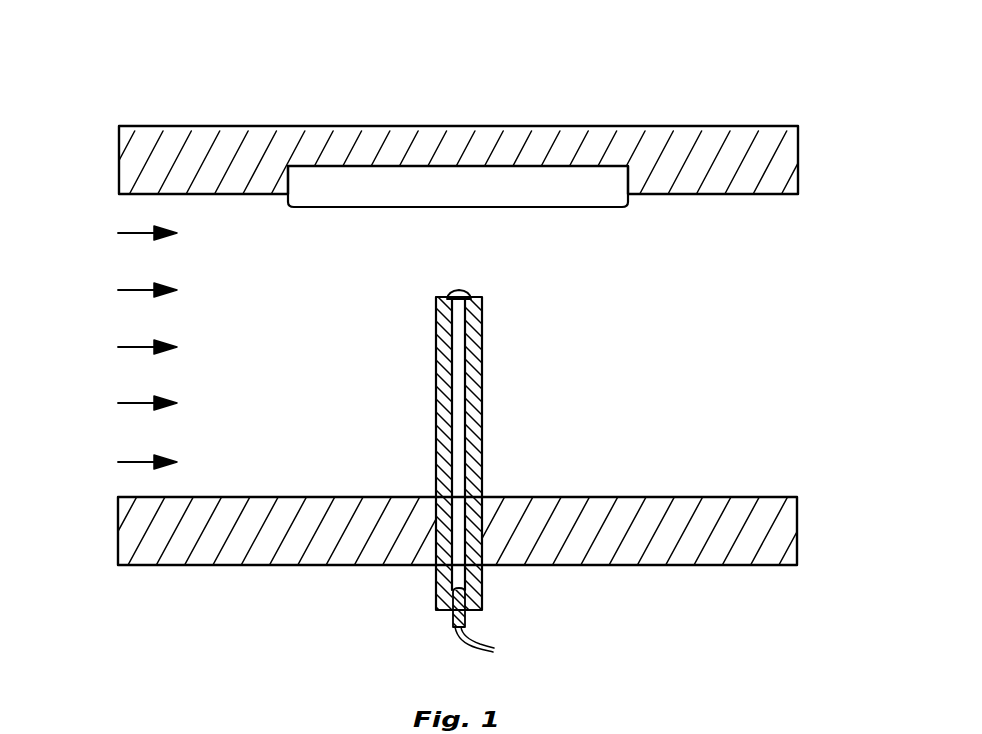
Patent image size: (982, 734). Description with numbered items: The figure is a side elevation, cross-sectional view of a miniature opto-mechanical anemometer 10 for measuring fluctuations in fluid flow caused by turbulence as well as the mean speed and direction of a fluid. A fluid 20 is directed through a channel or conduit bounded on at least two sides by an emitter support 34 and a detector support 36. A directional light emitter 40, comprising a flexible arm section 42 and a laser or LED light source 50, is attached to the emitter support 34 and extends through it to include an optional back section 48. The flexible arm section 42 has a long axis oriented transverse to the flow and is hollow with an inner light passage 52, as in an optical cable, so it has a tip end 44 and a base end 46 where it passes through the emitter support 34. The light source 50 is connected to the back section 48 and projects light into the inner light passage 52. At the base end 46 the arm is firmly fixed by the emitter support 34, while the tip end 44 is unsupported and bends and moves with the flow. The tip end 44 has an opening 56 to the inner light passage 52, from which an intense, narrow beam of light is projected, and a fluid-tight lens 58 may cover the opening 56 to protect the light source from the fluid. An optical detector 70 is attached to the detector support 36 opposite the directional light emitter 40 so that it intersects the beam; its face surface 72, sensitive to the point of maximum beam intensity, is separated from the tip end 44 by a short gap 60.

The opto-mechanical anemometer 10 is at (103, 73).
The fluid 20 is at (132, 347).
The emitter support 34 is at (247, 566).
The detector support 36 is at (245, 126).
The directional light emitter 40 is at (483, 392).
The flexible arm section 42 is at (436, 415).
The tip end 44 is at (483, 315).
The base end 46 is at (434, 484).
The back section 48 is at (435, 591).
The light source 50 is at (465, 615).
The inner light passage 52 is at (483, 440).
The opening 56 is at (438, 312).
The fluid-tight lens 58 is at (458, 291).
The gap 60 is at (492, 208).
The optical detector 70 is at (627, 206).
The face surface 72 is at (552, 207).